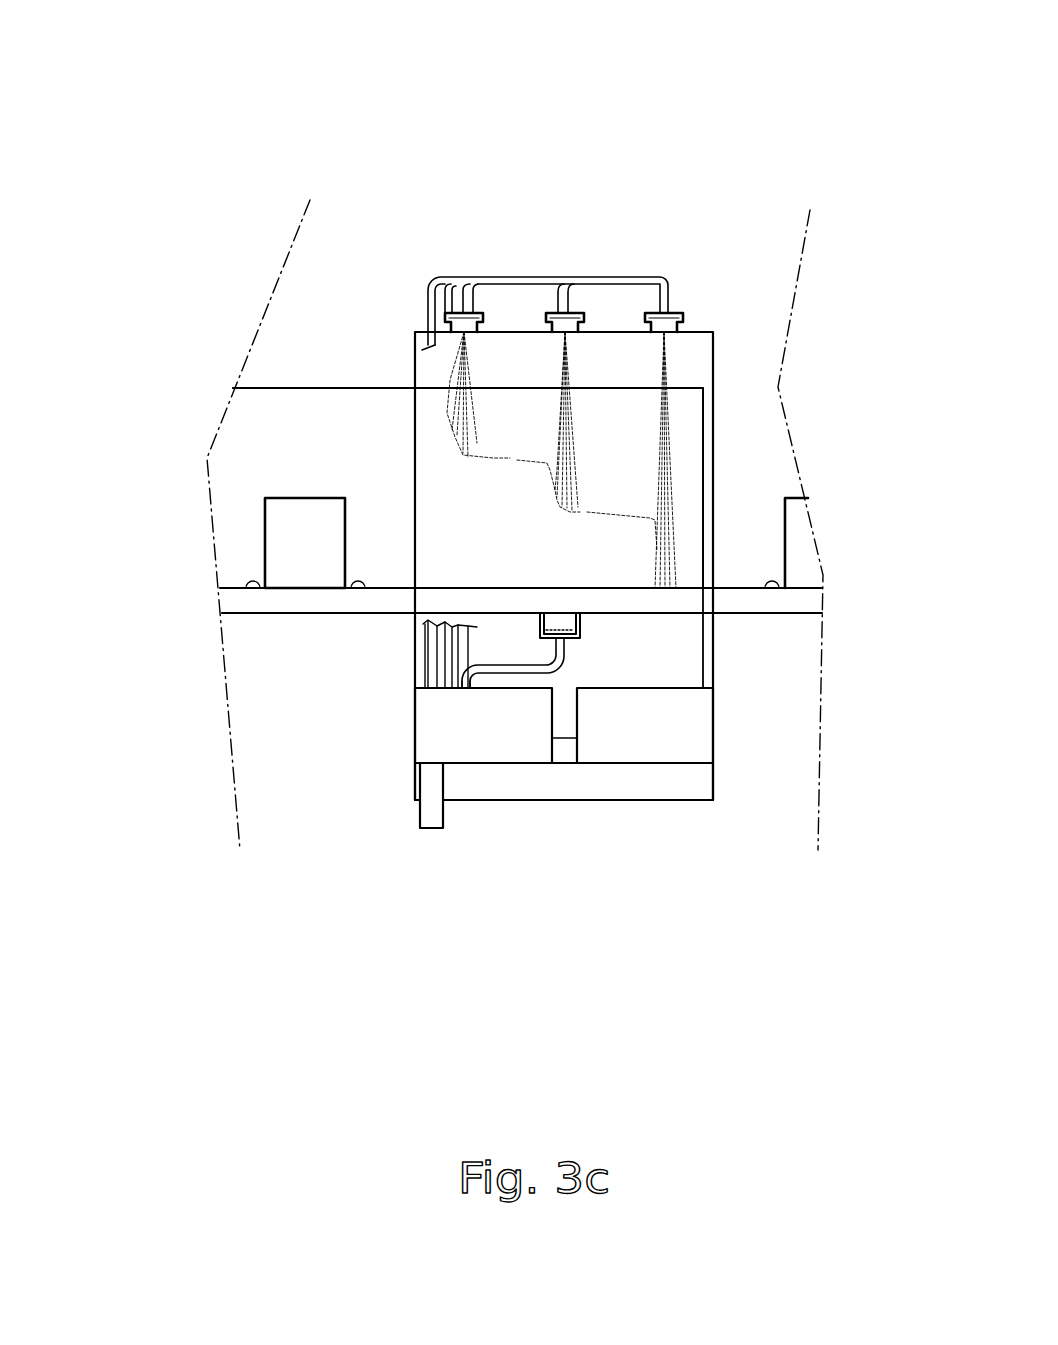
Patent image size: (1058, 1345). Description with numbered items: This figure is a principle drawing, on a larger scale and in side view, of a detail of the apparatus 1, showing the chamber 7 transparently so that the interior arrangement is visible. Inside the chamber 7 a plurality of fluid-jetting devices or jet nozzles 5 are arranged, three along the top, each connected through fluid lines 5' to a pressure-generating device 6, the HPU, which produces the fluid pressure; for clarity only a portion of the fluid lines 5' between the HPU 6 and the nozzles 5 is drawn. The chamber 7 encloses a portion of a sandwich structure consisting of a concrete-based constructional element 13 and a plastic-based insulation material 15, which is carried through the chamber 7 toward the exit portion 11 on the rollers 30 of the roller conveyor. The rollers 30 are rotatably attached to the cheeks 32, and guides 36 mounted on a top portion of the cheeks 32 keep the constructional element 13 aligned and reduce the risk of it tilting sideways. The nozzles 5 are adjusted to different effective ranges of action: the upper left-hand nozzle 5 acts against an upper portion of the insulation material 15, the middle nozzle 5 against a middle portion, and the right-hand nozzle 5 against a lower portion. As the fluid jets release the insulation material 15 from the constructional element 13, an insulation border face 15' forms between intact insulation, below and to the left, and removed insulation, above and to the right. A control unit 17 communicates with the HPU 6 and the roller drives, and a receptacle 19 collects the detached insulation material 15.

The apparatus 1 is at (703, 130).
The fluid-jetting device 5 is at (677, 418).
The fluid line 5' is at (408, 831).
The pressure-generating device 6 is at (515, 690).
The chamber 7 is at (715, 355).
The exit portion 11 is at (745, 465).
The concrete-based constructional element 13 is at (704, 417).
The plastic-based insulation material 15 is at (324, 260).
The insulation border face 15' is at (367, 731).
The control unit 17 is at (647, 690).
The insulation receptacle 19 is at (713, 783).
The roller 30 is at (258, 588).
The cheek 32 is at (253, 615).
The guide 36 is at (283, 497).